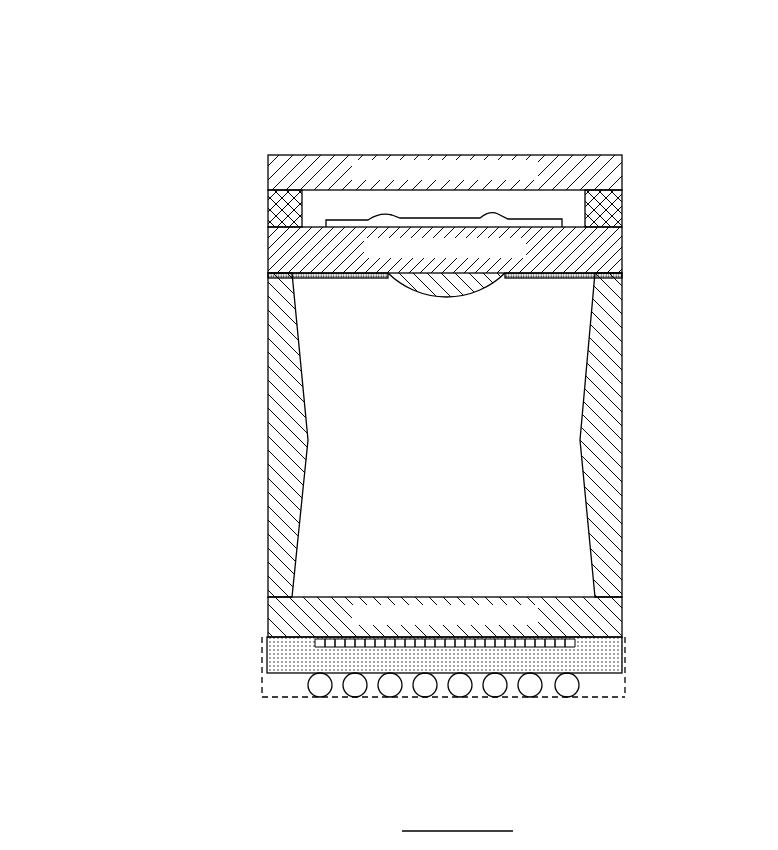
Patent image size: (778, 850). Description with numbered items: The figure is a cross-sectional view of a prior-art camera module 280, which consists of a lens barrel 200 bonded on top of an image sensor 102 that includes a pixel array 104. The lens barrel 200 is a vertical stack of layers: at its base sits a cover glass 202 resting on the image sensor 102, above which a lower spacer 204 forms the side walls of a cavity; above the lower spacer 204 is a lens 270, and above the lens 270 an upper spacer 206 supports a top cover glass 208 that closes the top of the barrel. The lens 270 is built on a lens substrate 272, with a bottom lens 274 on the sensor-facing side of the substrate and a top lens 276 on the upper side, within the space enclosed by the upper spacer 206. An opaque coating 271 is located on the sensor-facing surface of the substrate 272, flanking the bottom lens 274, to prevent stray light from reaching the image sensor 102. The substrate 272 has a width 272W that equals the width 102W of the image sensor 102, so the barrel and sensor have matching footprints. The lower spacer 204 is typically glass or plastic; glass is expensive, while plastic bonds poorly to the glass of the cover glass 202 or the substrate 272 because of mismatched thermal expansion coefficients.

The camera module 280 is at (141, 88).
The lens barrel 200 is at (207, 155).
The lens 270 is at (645, 246).
The top cover glass 208 is at (537, 180).
The upper spacer 206 is at (268, 208).
The lens substrate 272 is at (523, 257).
The top lens 276 is at (480, 218).
The opaque coating 271 is at (328, 279).
The bottom lens 274 is at (462, 298).
The lower spacer 204 is at (268, 437).
The cover glass 202 is at (537, 625).
The width of substrate 272W is at (622, 95).
The image sensor 102 is at (625, 667).
The pixel array 104 is at (315, 642).
The width of image sensor 102W is at (622, 700).